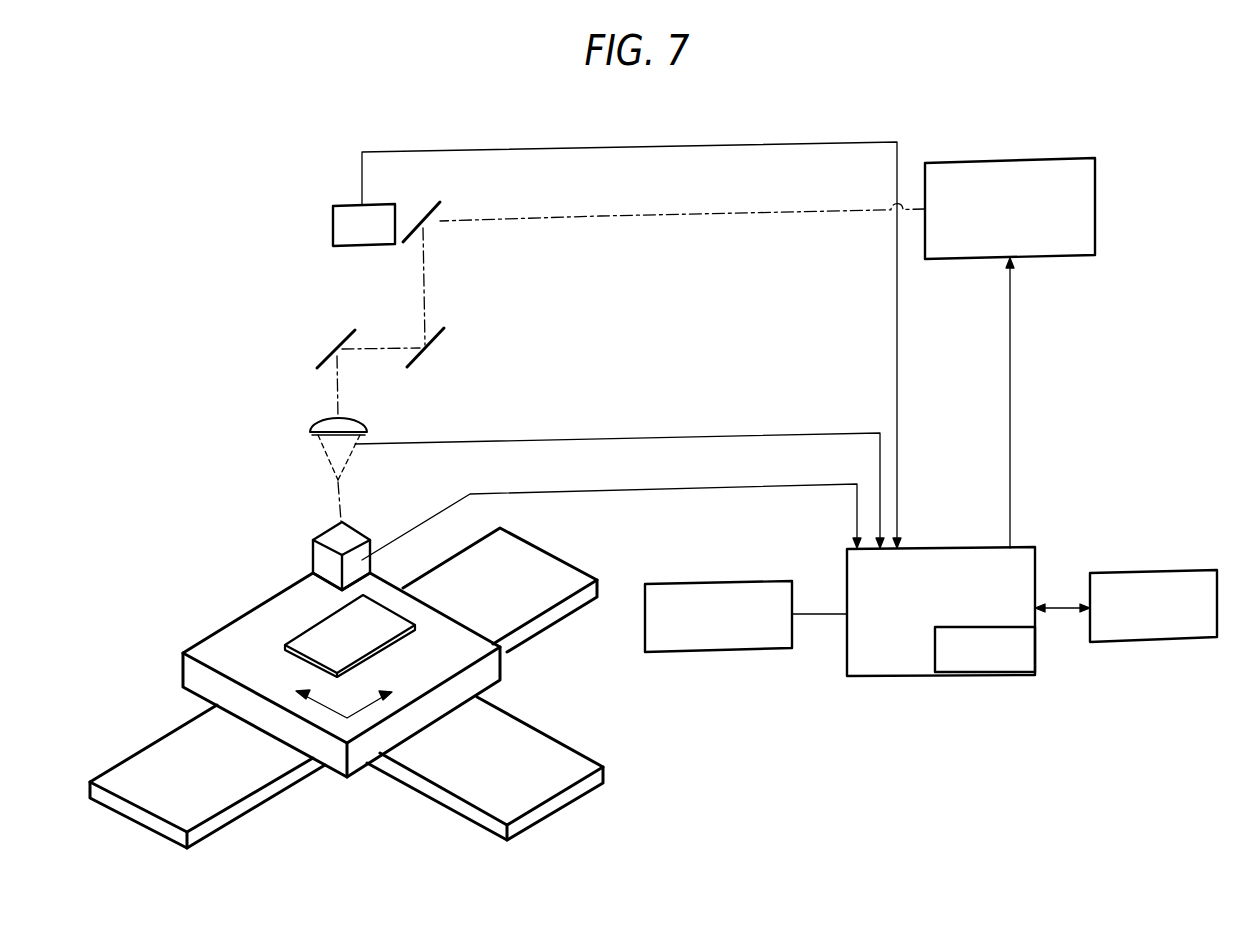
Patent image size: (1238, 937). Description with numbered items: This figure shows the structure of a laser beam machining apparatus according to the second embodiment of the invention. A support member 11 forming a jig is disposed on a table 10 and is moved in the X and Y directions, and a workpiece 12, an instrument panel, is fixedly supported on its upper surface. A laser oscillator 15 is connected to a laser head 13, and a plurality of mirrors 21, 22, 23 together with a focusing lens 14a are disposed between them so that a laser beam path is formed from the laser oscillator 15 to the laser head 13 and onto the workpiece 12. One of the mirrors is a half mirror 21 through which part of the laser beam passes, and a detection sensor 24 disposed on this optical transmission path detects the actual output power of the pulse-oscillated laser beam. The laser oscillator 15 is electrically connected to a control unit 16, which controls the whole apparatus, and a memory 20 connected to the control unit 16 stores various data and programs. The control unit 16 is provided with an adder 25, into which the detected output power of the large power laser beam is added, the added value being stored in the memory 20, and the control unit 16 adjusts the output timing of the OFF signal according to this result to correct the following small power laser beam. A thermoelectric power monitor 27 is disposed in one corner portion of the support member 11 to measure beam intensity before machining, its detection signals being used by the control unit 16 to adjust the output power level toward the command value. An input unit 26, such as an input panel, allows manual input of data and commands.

The table 10 is at (533, 743).
The support member 11 is at (182, 670).
The workpiece 12 is at (308, 643).
The laser head 13 is at (298, 458).
The focusing lens 14a is at (348, 420).
The laser oscillator 15 is at (1095, 205).
The control unit 16 is at (935, 548).
The memory 20 is at (1150, 572).
The half mirror 21 is at (436, 210).
The mirror 22 is at (440, 350).
The mirror 23 is at (349, 336).
The detection sensor 24 is at (331, 226).
The adder 25 is at (934, 649).
The input unit 26 is at (720, 582).
The thermoelectric power monitor 27 is at (313, 560).